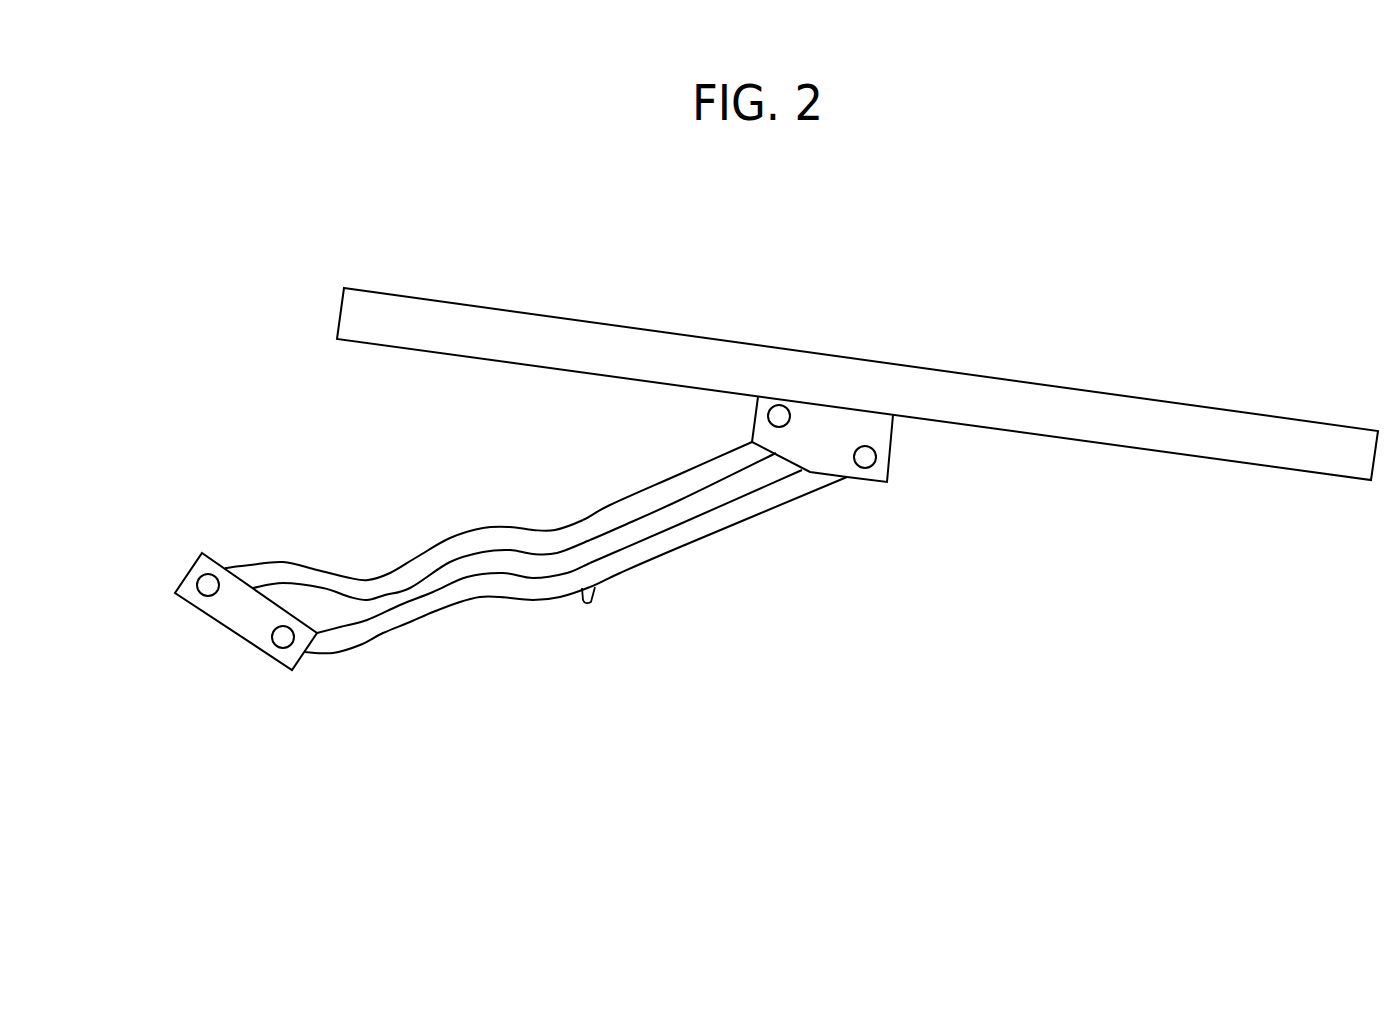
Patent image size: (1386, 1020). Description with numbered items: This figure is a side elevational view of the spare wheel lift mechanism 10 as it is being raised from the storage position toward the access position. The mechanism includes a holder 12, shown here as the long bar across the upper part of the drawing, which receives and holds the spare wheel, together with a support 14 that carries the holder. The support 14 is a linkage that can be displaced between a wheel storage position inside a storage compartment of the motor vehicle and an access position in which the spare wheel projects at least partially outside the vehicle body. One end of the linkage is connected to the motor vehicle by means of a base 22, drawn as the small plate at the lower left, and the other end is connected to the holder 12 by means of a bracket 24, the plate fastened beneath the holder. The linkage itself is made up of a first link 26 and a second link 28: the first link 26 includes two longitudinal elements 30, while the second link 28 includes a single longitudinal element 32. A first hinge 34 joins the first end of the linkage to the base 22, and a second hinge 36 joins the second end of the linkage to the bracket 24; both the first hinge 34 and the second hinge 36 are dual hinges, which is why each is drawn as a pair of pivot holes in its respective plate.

The spare wheel lift mechanism 10 is at (1055, 260).
The holder 12 is at (1027, 393).
The support 14 is at (423, 662).
The base 22 is at (238, 617).
The bracket 24 is at (823, 450).
The first link 26 is at (364, 578).
The second link 28 is at (500, 597).
The longitudinal elements 30 is at (615, 502).
The longitudinal element 32 is at (637, 565).
The first hinge 34 is at (288, 628).
The second hinge 36 is at (865, 445).